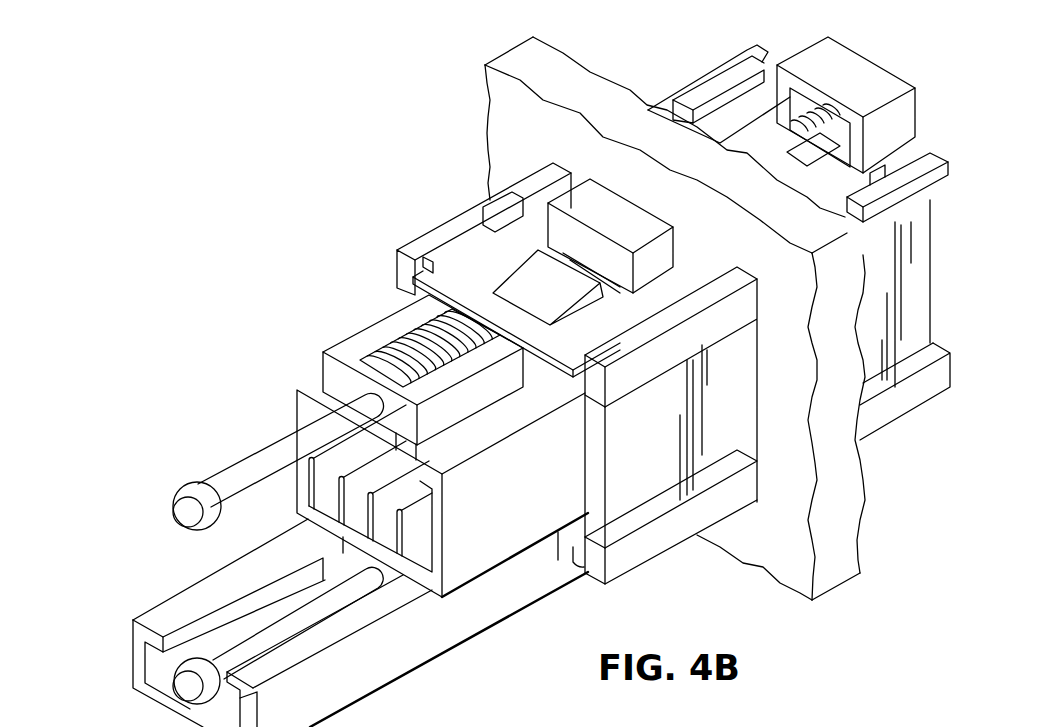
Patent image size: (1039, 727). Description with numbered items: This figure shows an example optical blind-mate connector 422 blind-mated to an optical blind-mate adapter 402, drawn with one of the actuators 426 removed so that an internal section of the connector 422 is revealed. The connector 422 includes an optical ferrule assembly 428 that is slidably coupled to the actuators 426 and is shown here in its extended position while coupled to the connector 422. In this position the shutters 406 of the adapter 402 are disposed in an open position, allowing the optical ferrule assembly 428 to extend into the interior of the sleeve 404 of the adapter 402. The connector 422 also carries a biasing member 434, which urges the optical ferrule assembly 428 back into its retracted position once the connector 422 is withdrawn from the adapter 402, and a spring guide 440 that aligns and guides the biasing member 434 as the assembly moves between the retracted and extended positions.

The optical blind-mate adapter 402 is at (678, 67).
The sleeve 404 is at (933, 283).
The shutters 406 is at (477, 262).
The optical blind-mate connector 422 is at (278, 323).
The actuators 426 is at (133, 654).
The optical ferrule assembly 428 is at (578, 474).
The biasing member 434 is at (403, 380).
The spring guide 440 is at (257, 460).